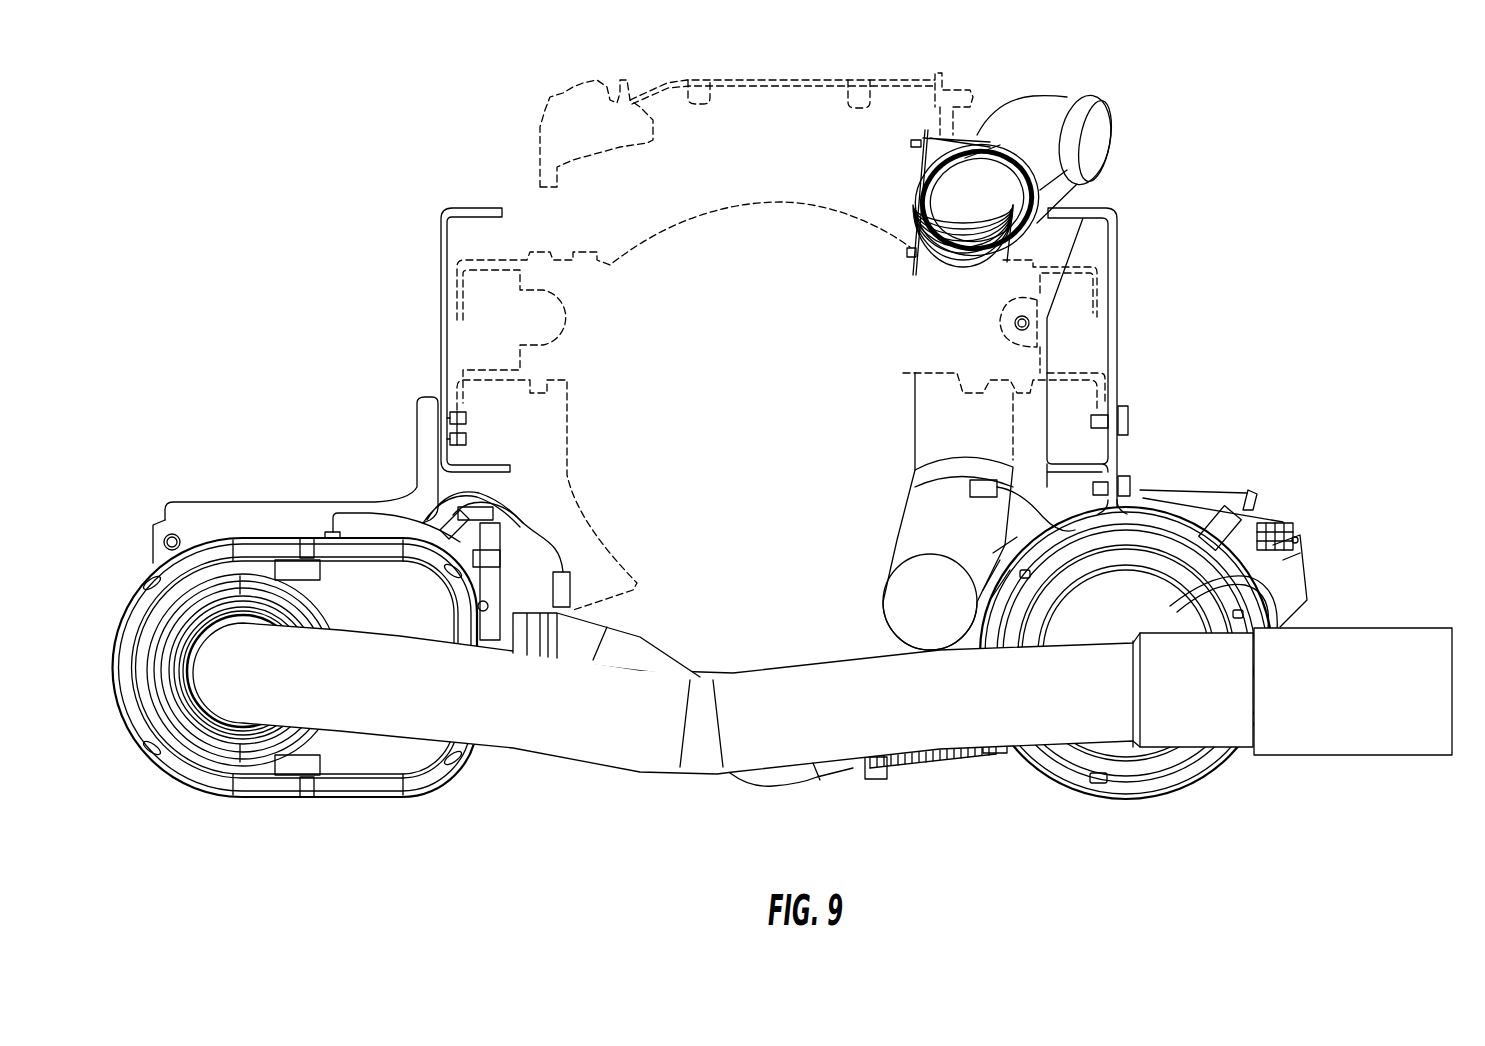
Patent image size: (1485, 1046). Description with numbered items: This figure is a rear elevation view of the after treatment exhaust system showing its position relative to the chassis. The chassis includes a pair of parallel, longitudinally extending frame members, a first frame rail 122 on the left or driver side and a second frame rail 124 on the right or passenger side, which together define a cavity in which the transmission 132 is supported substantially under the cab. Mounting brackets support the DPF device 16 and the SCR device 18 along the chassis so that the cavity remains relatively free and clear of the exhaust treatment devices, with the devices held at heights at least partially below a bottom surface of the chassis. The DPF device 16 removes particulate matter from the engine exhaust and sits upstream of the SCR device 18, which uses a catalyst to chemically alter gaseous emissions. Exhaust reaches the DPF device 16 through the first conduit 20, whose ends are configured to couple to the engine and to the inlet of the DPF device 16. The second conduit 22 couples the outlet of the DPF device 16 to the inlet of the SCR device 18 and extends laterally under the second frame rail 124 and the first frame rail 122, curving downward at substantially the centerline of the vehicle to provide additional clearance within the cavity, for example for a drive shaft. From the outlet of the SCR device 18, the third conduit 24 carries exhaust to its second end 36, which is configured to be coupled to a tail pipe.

The diesel particulate filter (DPF) device 16 is at (1152, 800).
The selective catalytic reduction converter (SCR) device 18 is at (262, 797).
The first conduit 20 is at (1005, 116).
The second conduit 22 is at (588, 632).
The third conduit 24 is at (483, 725).
The second end 36 is at (1315, 748).
The first frame rail 122 is at (444, 207).
The second frame rail 124 is at (1112, 206).
The transmission 132 is at (696, 242).